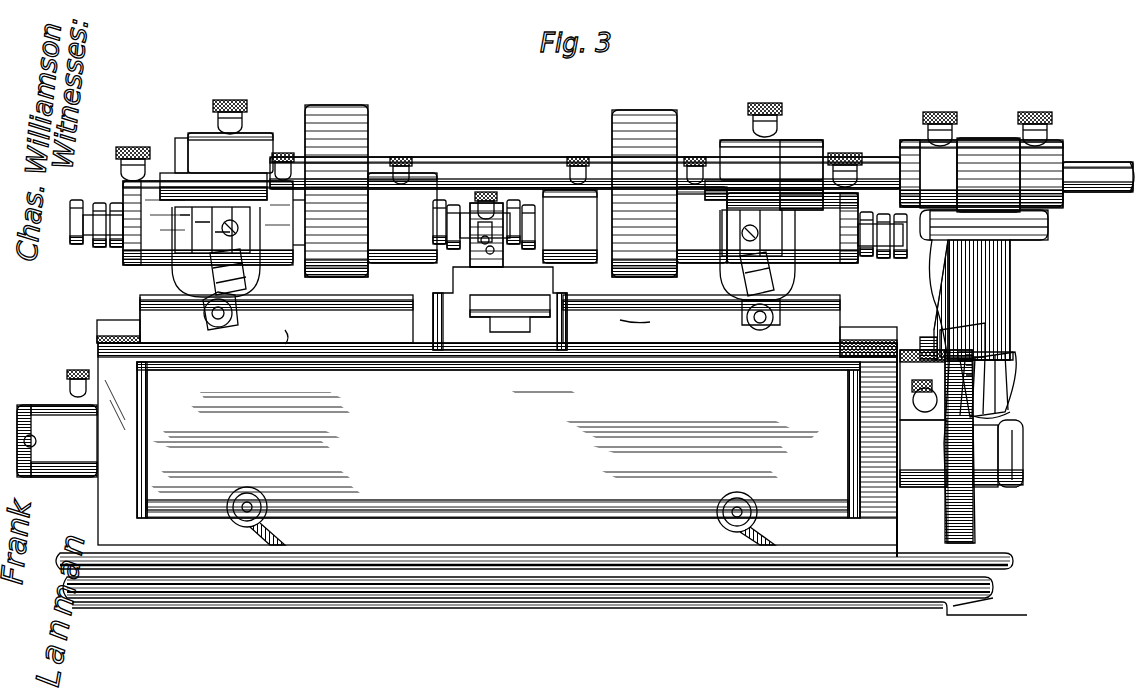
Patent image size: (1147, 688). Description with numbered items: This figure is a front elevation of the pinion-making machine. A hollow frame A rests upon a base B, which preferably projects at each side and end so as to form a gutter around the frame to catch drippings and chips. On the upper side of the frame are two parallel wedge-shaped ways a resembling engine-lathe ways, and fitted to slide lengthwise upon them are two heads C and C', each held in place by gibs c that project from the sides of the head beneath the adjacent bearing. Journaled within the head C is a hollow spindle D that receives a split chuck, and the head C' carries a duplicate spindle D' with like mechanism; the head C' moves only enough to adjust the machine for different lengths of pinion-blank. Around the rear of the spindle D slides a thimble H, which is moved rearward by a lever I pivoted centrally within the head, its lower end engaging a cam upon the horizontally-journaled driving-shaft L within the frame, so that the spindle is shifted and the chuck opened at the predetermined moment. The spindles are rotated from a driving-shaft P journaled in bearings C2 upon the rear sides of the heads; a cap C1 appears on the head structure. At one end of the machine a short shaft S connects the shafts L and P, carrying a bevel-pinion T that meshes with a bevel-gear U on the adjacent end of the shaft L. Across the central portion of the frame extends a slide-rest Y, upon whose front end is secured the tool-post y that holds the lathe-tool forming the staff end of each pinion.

The frame A is at (495, 450).
The base B is at (541, 592).
The ways a is at (100, 327).
The head C is at (268, 312).
The head C' is at (713, 316).
The gib c is at (632, 340).
The cap C1 is at (764, 167).
The bearing C2 is at (216, 166).
The hollow spindle D is at (464, 191).
The spindle D' is at (495, 191).
The driving-shaft P is at (500, 170).
The thimble H is at (216, 252).
The lever I is at (225, 289).
The slide-rest Y is at (485, 280).
The tool-post y is at (476, 222).
The short shaft S is at (1010, 360).
The bevel-pinion T is at (1012, 382).
The bevel-gear U is at (965, 446).
The driving-shaft L is at (1022, 450).